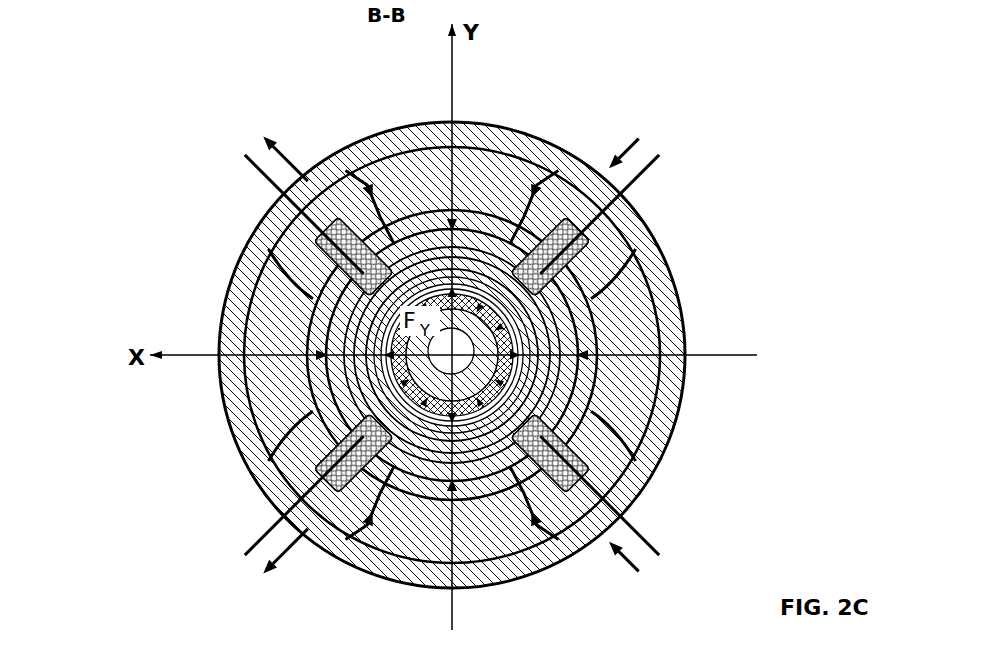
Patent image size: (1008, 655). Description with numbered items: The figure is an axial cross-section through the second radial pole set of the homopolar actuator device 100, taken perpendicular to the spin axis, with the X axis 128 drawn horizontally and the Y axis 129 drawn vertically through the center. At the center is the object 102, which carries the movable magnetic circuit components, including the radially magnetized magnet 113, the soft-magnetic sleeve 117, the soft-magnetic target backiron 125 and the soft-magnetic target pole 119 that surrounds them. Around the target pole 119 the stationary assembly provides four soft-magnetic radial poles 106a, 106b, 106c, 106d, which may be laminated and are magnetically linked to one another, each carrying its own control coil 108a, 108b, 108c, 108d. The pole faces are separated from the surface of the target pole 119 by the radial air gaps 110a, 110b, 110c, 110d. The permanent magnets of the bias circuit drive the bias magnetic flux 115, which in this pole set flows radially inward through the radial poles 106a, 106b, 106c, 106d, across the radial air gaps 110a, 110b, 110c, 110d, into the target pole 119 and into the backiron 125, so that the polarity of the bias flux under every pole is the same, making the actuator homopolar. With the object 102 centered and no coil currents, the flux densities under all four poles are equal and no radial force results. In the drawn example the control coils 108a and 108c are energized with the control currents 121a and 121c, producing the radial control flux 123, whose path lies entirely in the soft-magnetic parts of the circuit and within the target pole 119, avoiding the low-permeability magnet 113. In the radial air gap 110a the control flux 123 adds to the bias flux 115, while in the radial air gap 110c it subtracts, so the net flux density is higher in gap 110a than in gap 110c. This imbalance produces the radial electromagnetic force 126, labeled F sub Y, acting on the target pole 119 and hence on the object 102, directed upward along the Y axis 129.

The device 100 is at (120, 145).
The object 102 is at (637, 433).
The radial pole 106a is at (465, 147).
The radial pole 106b is at (312, 282).
The radial pole 106c is at (367, 553).
The radial pole 106d is at (613, 273).
The control coil 108a is at (415, 178).
The control coil 108b is at (278, 246).
The control coil 108c is at (483, 580).
The control coil 108d is at (647, 472).
The radial air gap 110a is at (370, 180).
The radial air gap 110b is at (330, 372).
The radial air gap 110c is at (515, 557).
The radial air gap 110d is at (567, 302).
The radially magnetized magnet 113 is at (505, 165).
The bias magnetic flux 115 is at (440, 218).
The soft-magnetic sleeve 117 is at (537, 318).
The target pole 119 is at (615, 402).
The control current 121a is at (293, 160).
The control current 121c is at (283, 538).
The radial control flux 123 is at (268, 220).
The soft-magnetic target backiron 125 is at (333, 395).
The radial electromagnetic force 126 is at (280, 286).
The X axis 128 is at (188, 352).
The Y axis 129 is at (453, 90).